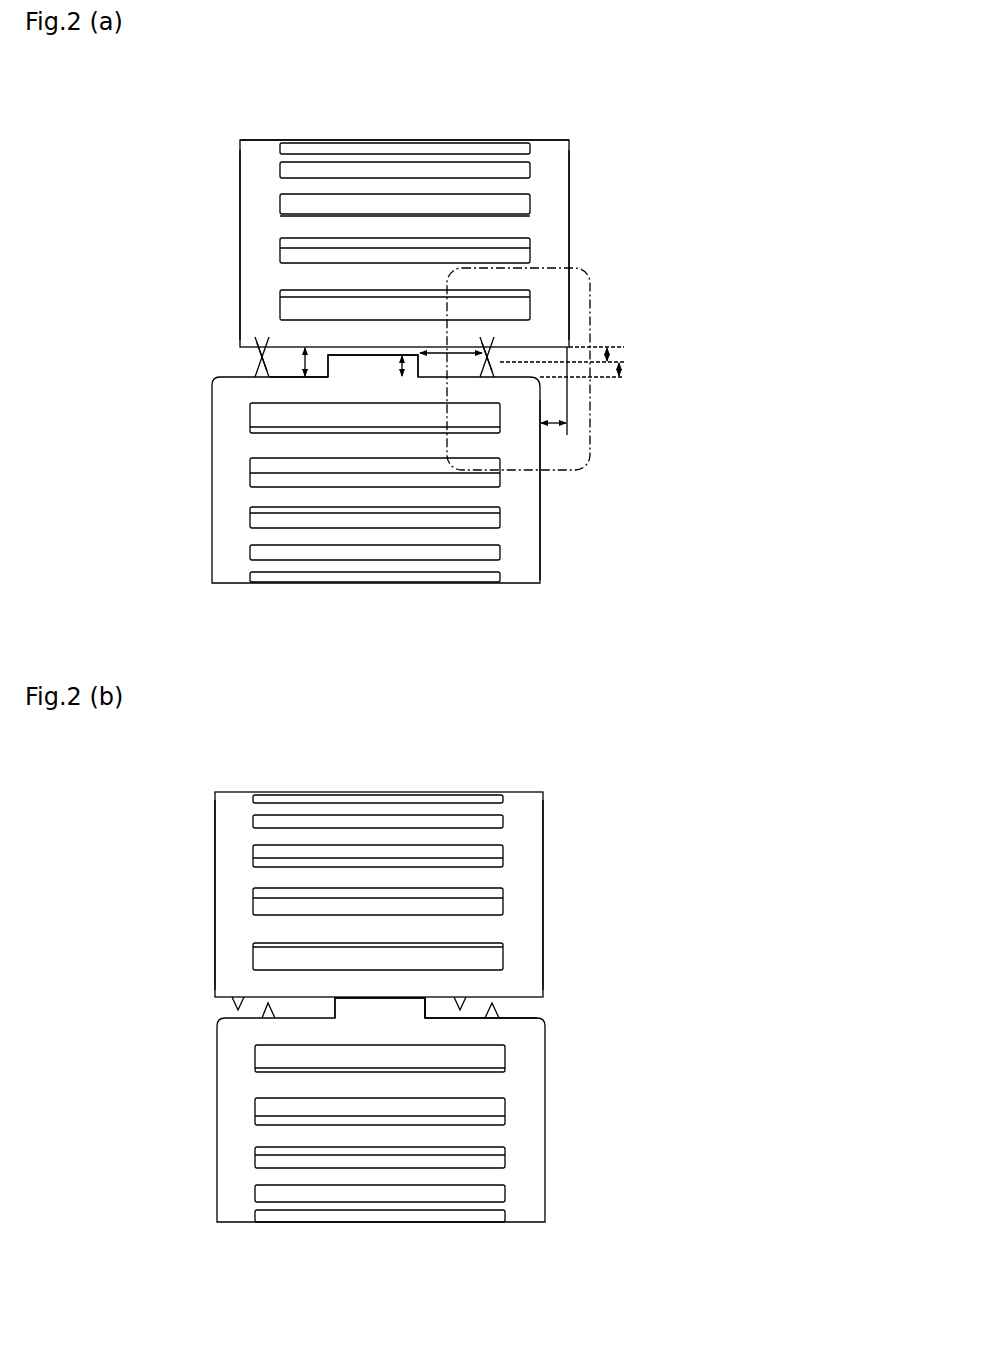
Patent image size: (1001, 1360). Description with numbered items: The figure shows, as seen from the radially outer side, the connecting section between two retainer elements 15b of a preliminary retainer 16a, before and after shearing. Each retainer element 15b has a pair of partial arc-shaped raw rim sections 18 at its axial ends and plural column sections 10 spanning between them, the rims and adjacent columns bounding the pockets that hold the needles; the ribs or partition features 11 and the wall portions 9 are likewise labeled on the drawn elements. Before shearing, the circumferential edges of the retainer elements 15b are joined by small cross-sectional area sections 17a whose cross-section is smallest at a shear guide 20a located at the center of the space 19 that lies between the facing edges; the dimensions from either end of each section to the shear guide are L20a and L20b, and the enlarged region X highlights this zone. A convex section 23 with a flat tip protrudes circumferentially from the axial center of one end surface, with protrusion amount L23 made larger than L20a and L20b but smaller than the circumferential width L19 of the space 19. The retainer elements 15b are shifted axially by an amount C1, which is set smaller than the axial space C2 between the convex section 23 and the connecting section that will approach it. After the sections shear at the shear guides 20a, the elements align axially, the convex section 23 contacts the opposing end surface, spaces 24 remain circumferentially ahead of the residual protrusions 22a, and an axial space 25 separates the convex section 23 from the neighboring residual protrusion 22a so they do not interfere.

In FIG. 2B, the side wall 9 is at (228, 840).
In FIG. 2A, the column section 10 is at (420, 188).
In FIG. 2B, the column section 10 is at (483, 875).
In FIG. 2A, the rib 11 is at (345, 370).
In FIG. 2B, the rib 11 is at (297, 968).
In FIG. 2A, the retainer element 15b is at (542, 128).
In FIG. 2B, the retainer element 15b is at (512, 778).
In FIG. 2A, the preliminary retainer 16a is at (584, 142).
In FIG. 2A, the small cross-sectional area section 17a is at (262, 345).
In FIG. 2A, the raw rim section 18 is at (248, 183).
In FIG. 2A, the space 19 is at (288, 353).
In FIG. 2A, the shear guide 20a is at (293, 363).
In FIG. 2B, the residual protrusion 22a is at (233, 1003).
In FIG. 2A, the convex section 23 is at (348, 372).
In FIG. 2B, the convex section 23 is at (363, 1008).
In FIG. 2B, the space 24 is at (243, 1005).
In FIG. 2B, the space 25 is at (437, 1008).
In FIG. 2A, the enlarged region X is at (593, 283).
In FIG. 2A, the amount of axial shifting C1 is at (550, 425).
In FIG. 2A, the axial space C2 is at (447, 350).
In FIG. 2A, the circumferential dimension of space L19 is at (300, 362).
In FIG. 2A, the dimension to shear guide L20a is at (612, 352).
In FIG. 2A, the dimension to shear guide L20b is at (621, 372).
In FIG. 2A, the amount of protrusion of convex section L23 is at (402, 366).